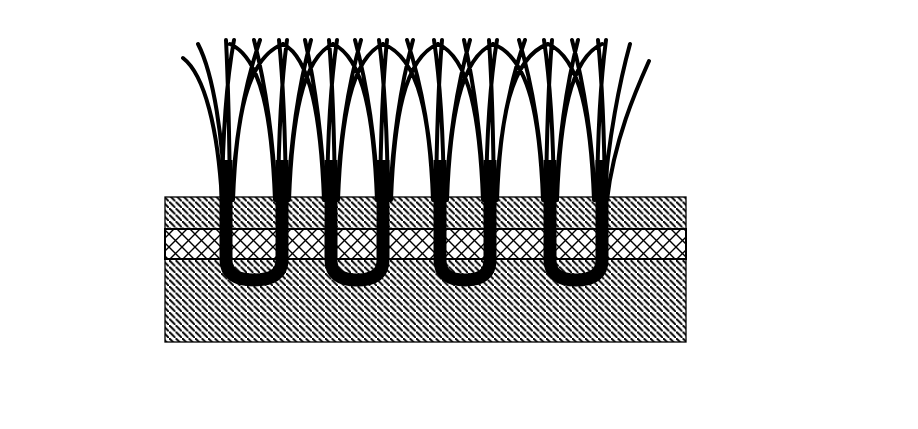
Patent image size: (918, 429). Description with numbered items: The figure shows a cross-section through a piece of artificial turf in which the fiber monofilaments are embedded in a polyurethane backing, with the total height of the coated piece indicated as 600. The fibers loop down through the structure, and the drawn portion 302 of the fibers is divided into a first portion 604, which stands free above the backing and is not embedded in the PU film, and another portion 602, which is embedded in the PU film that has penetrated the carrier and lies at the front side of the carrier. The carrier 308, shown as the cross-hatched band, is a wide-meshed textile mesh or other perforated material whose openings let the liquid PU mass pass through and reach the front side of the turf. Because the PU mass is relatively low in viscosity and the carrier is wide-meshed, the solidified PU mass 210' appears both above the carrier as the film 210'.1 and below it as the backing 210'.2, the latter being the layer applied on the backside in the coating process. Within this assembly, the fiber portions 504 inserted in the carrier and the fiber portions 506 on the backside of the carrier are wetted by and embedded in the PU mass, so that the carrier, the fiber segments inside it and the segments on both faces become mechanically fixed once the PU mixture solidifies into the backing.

The total height of artificial turf piece 600 is at (116, 353).
The embedded fiber portion 602 is at (431, 269).
The non-embedded fiber portion 604 is at (165, 42).
The fiber portion 302 is at (478, 180).
The solidified PU mass 210' is at (414, 240).
The PU film on front side of carrier 210'.1 is at (425, 213).
The wide-meshed carrier 308 is at (657, 255).
The PU backing on backside of carrier 210'.2 is at (425, 300).
The wetted fiber portion in carrier 504 is at (470, 244).
The wetted fiber portion on backside 506 is at (470, 300).